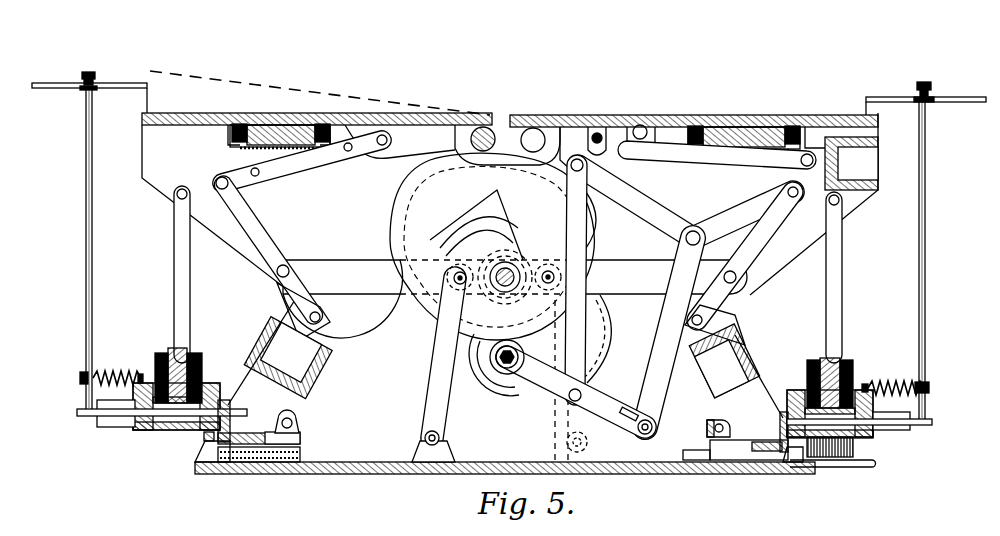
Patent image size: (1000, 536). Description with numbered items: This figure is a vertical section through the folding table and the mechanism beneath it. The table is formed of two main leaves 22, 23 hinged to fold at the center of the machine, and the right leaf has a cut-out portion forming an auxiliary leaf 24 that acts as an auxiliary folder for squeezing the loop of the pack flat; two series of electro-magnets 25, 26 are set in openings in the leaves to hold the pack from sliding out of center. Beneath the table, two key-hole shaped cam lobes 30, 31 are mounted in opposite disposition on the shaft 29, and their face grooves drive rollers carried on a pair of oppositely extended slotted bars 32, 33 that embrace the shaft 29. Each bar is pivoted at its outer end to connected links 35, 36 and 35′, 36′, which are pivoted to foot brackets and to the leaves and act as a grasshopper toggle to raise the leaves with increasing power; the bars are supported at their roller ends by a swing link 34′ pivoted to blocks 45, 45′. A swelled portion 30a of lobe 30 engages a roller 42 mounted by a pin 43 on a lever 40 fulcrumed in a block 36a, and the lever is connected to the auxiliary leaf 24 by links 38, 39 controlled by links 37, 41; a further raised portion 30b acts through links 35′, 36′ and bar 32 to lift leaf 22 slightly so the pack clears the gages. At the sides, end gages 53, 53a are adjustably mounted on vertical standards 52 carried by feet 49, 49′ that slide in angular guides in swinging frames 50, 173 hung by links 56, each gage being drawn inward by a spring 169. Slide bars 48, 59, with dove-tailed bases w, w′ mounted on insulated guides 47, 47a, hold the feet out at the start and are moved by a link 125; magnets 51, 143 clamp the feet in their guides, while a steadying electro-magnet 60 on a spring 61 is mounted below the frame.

The main leaf 22 is at (420, 114).
The main leaf 23 is at (678, 126).
The auxiliary leaf 24 is at (580, 116).
The electro-magnets 25 is at (282, 124).
The electro-magnets 26 is at (760, 126).
The shaft 29 is at (505, 271).
The cam lobe 30 is at (392, 233).
The swelled portion 30a is at (593, 212).
The raised portion 30b is at (503, 309).
The cam lobe 31 is at (498, 393).
The slotted bar 32 is at (431, 299).
The slotted bar 33 is at (666, 277).
The swing link 34′ is at (436, 370).
The link 35 is at (752, 261).
The link 35′ is at (265, 221).
The link 36 is at (717, 157).
The link 36′ is at (306, 172).
The block 36a is at (556, 428).
The link 37 is at (738, 211).
The link 38 is at (655, 190).
The link 39 is at (651, 381).
The lever 40 is at (541, 384).
The link 41 is at (588, 246).
The roller 42 is at (500, 358).
The pin 43 is at (499, 372).
The block 45 is at (441, 443).
The block 45′ is at (568, 448).
The guide 47 is at (700, 451).
The guide 47a is at (302, 452).
The slide bar 48 is at (780, 430).
The foot 49 is at (932, 422).
The foot 49′ is at (76, 412).
The frame 50 is at (797, 392).
The magnet 51 is at (848, 366).
The vertical standard 52 is at (86, 206).
The end gage 53 is at (864, 104).
The end gage 53a is at (149, 100).
The links 56 is at (192, 268).
The slide bar 59 is at (231, 421).
The electro-magnet 60 is at (854, 447).
The spring 61 is at (838, 466).
The link 125 is at (707, 428).
The magnet 143 is at (238, 337).
The spring 169 is at (139, 377).
The frame 173 is at (236, 383).
The dove-tailed base w is at (727, 452).
The dove-tailed base w′ is at (301, 437).